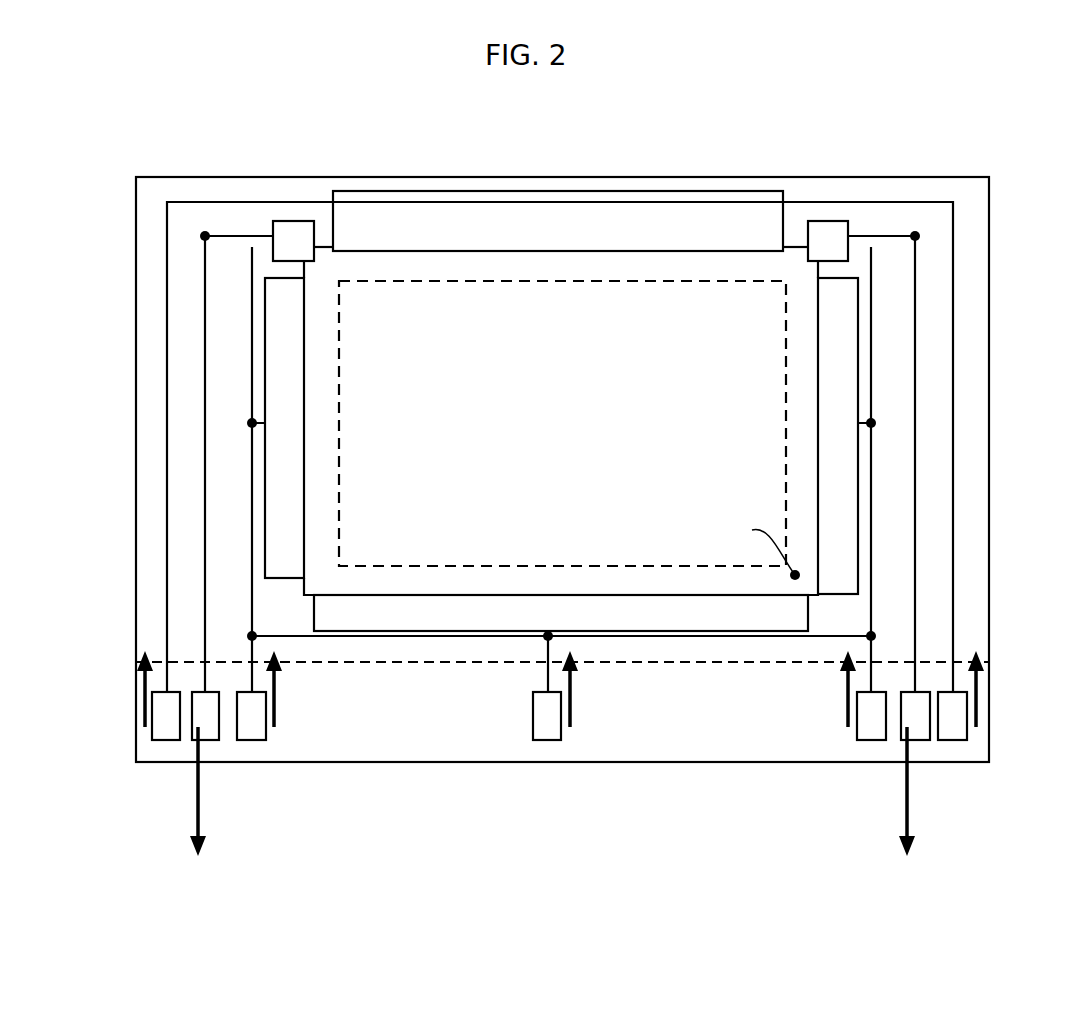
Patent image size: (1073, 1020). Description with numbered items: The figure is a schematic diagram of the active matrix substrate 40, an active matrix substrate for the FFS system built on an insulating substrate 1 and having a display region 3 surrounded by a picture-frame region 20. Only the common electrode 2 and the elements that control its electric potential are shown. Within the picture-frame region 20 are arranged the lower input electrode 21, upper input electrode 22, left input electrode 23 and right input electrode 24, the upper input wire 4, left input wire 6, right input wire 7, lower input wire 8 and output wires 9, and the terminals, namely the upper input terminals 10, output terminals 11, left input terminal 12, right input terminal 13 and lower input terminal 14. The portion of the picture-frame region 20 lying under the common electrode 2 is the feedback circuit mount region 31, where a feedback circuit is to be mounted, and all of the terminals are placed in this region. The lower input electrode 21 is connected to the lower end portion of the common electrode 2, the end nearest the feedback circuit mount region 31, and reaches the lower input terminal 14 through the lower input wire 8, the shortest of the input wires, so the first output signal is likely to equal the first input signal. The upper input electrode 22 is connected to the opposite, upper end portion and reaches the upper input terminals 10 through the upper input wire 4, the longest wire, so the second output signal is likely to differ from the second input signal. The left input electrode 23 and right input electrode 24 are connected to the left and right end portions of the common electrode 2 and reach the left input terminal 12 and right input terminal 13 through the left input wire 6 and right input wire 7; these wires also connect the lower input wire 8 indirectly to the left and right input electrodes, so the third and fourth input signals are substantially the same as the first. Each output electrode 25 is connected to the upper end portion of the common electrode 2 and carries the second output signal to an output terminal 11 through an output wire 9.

The insulating substrate 1 is at (916, 177).
The common electrode 2 is at (795, 258).
The display region 3 is at (677, 281).
The upper input wire 4 is at (881, 202).
The left input wire 6 is at (252, 382).
The right input wire 7 is at (871, 382).
The lower input wire 8 is at (548, 650).
The output wire 9 is at (206, 478).
The upper input terminal 10 is at (161, 740).
The output terminal 11 is at (211, 740).
The left input terminal 12 is at (253, 740).
The right input terminal 13 is at (871, 740).
The lower input terminal 14 is at (548, 740).
The picture-frame region 20 is at (144, 201).
The lower input electrode 21 is at (567, 605).
The upper input electrode 22 is at (568, 220).
The left input electrode 23 is at (305, 400).
The right input electrode 24 is at (828, 400).
The output electrode 25 is at (297, 221).
The feedback circuit mount region 31 is at (370, 740).
The active matrix substrate 40 is at (125, 151).